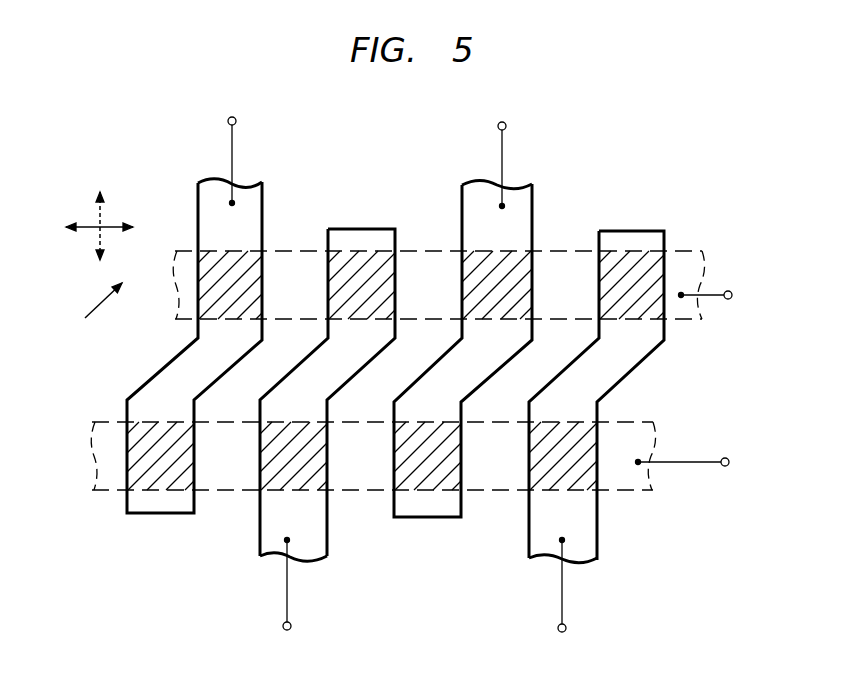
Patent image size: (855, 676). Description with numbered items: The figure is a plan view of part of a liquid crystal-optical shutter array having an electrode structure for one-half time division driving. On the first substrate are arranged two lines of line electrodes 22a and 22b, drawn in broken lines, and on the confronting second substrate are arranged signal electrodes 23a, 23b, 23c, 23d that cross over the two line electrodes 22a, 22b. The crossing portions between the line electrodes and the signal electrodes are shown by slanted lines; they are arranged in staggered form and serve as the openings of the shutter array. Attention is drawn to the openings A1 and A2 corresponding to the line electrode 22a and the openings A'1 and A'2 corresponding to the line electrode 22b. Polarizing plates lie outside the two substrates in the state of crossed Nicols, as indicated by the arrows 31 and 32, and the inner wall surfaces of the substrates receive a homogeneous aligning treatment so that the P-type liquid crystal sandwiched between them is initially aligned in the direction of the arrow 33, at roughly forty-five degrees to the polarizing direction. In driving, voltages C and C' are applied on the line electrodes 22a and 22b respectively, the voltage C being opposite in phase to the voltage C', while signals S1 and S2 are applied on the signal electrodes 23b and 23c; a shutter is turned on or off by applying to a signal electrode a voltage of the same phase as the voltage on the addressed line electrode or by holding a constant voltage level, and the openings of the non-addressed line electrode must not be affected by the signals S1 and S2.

The arrow 31 is at (112, 226).
The arrow 32 is at (100, 212).
The arrow 33 is at (107, 298).
The line electrode 22a is at (566, 260).
The line electrode 22b is at (650, 427).
The signal electrode 23a is at (580, 550).
The signal electrode 23b is at (428, 507).
The signal electrode 23c is at (309, 553).
The signal electrode 23d is at (159, 505).
The opening A1 is at (468, 272).
The opening A2 is at (328, 271).
The opening A'1 is at (409, 437).
The opening A'2 is at (273, 437).
The signal S1 is at (515, 163).
The signal S2 is at (300, 592).
The voltage C is at (714, 298).
The voltage C' is at (694, 464).